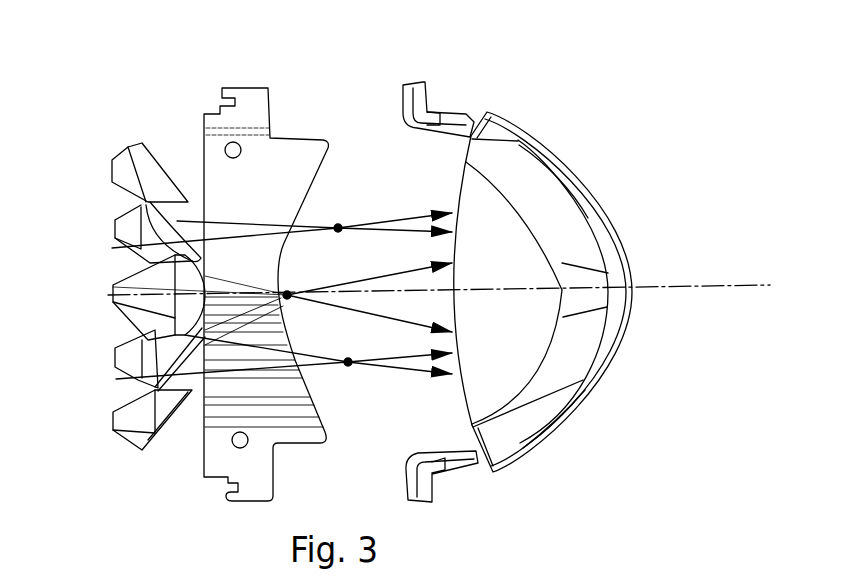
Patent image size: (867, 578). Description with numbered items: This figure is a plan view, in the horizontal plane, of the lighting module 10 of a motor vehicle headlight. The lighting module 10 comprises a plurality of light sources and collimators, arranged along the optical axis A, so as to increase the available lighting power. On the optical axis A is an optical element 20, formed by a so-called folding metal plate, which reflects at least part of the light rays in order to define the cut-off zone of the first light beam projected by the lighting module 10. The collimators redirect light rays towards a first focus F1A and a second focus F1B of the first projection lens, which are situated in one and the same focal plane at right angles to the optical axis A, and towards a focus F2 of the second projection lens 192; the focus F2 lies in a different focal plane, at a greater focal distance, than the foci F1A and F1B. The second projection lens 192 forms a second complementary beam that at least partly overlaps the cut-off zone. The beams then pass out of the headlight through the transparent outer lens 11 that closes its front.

The lighting module 10 is at (348, 52).
The optical element 20 is at (242, 98).
The transparent outer lens 11 is at (583, 237).
The second projection lens 192 is at (458, 192).
The optical axis A is at (705, 285).
The first focus F1A is at (338, 226).
The second focus F1B is at (348, 367).
The focus of the second projection lens F2 is at (288, 298).